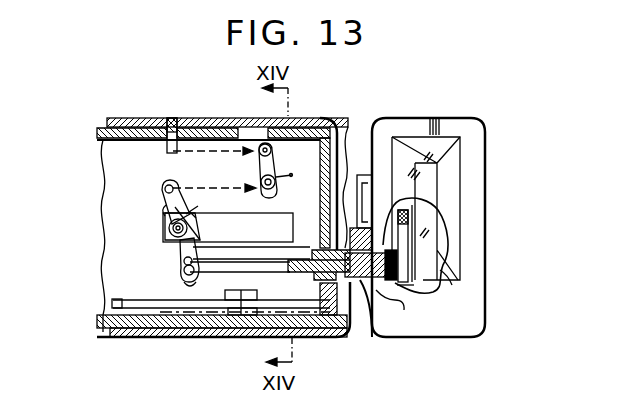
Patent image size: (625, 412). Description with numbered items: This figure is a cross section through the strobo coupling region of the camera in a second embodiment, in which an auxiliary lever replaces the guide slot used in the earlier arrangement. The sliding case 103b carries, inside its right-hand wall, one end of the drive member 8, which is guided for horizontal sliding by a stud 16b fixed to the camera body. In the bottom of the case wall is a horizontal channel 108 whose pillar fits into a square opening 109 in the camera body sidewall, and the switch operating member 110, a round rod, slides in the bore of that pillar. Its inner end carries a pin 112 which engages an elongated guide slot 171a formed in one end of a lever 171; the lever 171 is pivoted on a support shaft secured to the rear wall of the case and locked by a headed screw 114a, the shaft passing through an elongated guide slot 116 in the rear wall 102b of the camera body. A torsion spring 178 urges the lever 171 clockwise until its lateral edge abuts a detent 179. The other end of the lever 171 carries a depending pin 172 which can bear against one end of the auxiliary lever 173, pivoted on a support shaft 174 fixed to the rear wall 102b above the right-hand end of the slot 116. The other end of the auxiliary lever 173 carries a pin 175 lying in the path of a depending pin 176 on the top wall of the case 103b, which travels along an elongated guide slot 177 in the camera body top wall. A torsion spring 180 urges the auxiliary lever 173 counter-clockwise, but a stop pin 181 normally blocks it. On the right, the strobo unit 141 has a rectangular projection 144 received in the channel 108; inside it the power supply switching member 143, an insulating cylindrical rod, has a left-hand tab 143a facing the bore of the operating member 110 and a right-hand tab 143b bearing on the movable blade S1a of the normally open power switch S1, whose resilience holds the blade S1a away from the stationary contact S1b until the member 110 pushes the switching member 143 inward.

The drive member 8 is at (110, 298).
The stud 16b is at (235, 335).
The rear wall 102b is at (117, 176).
The case 103b is at (301, 119).
The horizontal channel 108 is at (348, 328).
The square opening 109 is at (270, 261).
The switch operating member 110 is at (253, 270).
The pin 112 is at (180, 258).
The headed screw 114a is at (165, 226).
The elongated guide slot 116 is at (238, 230).
The strobo unit 141 is at (470, 322).
The power supply switching member 143 is at (421, 283).
The left-hand tab 143a is at (396, 298).
The right-hand tab 143b is at (436, 268).
The rectangular projection 144 is at (373, 333).
The lever 171 is at (214, 169).
The elongated guide slot 171a is at (184, 282).
The depending pin 172 is at (168, 184).
The auxiliary lever 173 is at (275, 190).
The support shaft 174 is at (261, 161).
The pin 175 is at (271, 150).
The depending pin 176 is at (174, 124).
The elongated guide slot 177 is at (240, 131).
The torsion spring 178 is at (166, 205).
The detent 179 is at (190, 212).
The torsion spring 180 is at (228, 227).
The stop pin 181 is at (299, 192).
The power switch S1 is at (410, 208).
The movable blade S1a is at (408, 240).
The stationary contact S1b is at (405, 262).